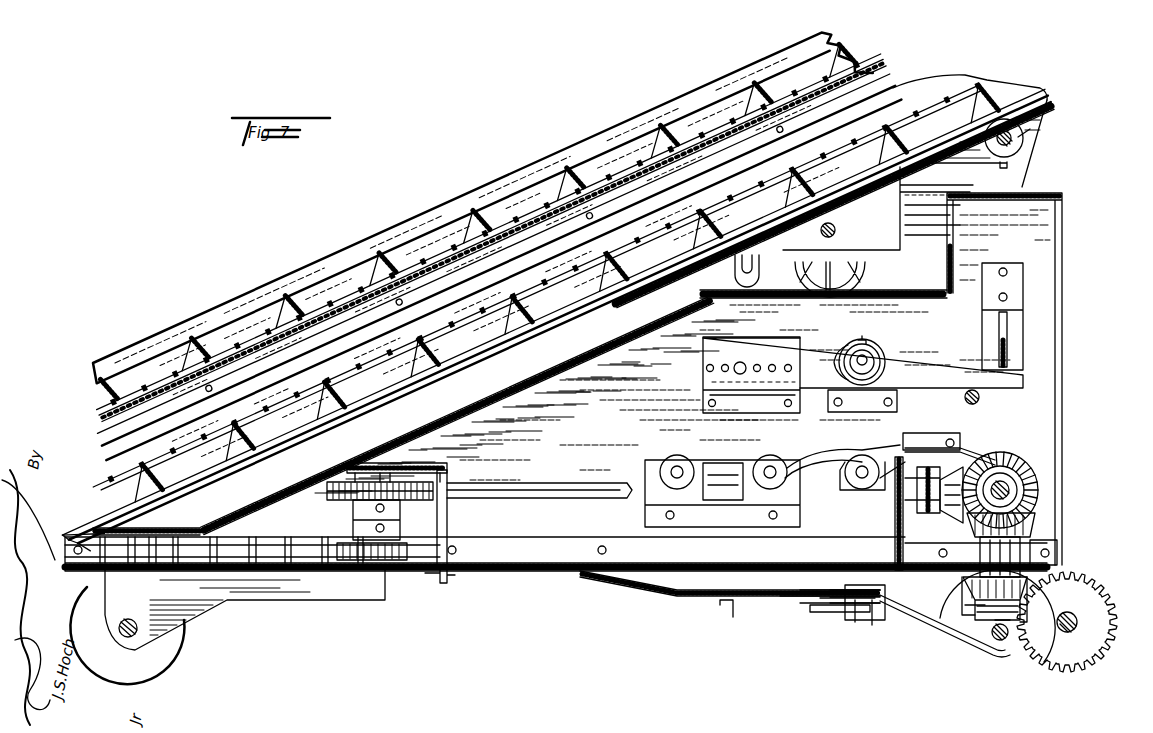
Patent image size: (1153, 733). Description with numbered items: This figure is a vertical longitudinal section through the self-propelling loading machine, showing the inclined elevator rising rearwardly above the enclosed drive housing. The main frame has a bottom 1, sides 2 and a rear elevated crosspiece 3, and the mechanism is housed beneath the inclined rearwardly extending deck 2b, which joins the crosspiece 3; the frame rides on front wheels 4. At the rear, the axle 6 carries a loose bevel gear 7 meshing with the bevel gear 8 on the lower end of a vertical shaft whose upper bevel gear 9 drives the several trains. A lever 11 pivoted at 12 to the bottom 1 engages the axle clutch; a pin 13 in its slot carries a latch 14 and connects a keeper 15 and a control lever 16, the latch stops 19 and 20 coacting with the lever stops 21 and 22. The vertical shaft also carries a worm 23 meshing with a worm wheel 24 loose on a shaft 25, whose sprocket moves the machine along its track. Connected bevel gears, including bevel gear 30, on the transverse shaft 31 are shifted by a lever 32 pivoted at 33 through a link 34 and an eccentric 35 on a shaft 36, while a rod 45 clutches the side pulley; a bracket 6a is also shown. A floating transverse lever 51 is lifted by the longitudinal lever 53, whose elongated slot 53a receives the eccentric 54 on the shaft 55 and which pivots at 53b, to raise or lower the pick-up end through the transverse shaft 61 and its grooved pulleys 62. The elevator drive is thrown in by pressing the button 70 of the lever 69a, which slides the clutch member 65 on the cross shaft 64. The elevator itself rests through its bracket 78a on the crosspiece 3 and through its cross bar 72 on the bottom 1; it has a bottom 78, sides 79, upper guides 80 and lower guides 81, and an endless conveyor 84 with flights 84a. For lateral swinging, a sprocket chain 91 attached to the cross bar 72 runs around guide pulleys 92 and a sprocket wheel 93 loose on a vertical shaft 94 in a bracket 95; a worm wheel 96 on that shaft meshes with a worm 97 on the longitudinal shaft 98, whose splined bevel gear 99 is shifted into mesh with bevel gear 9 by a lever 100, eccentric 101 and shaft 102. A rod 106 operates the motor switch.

The bottom 1 is at (410, 585).
The sides 2 is at (631, 391).
The inclined rearwardly extending deck 2b is at (539, 386).
The rear elevated crosspiece 3 is at (1050, 195).
The front wheels 4 is at (176, 660).
The rear axle 6 is at (980, 650).
The bearing bracket 6a is at (1059, 545).
The bevel gear 7 is at (1007, 688).
The bevel gear 8 is at (960, 602).
The bevel gear 9 is at (1037, 526).
The lever 11 is at (670, 595).
The pivot 12 is at (444, 584).
The pin 13 is at (850, 616).
The latch 14 is at (790, 612).
The keeper 15 is at (825, 614).
The lever 16 is at (786, 600).
The stop 19 is at (873, 628).
The stop 20 is at (790, 608).
The stop 21 is at (853, 625).
The stop 22 is at (720, 608).
The worm 23 is at (975, 625).
The worm wheel 24 is at (1100, 658).
The shaft 25 is at (1077, 622).
The bevel gear 30 is at (1040, 478).
The transverse shaft 31 is at (1030, 497).
The lever 32 is at (972, 450).
The pivot 33 is at (925, 444).
The link 34 is at (859, 413).
The eccentric 35 is at (772, 455).
The shaft 36 is at (762, 468).
The rod 45 is at (982, 399).
The transverse lever 51 is at (998, 364).
The longitudinal lever 53 is at (803, 344).
The elongated slot 53a is at (846, 344).
The pivot 53b is at (742, 366).
The eccentric 54 is at (872, 363).
The shaft 55 is at (864, 336).
The transverse shaft 61 is at (821, 232).
The grooved pulleys 62 is at (862, 268).
The transverse shaft 64 is at (992, 135).
The clutch member 65 is at (1020, 148).
The lever 69a is at (1018, 137).
The button 70 is at (735, 268).
The cross bar 72 is at (97, 515).
The bottom 78 is at (430, 336).
The bracket 78a is at (896, 226).
The sides 79 is at (440, 231).
The guides 80 is at (284, 283).
The guides 81 is at (378, 440).
The endless conveyor 84 is at (343, 270).
The flights or buckets 84a is at (604, 277).
The sprocket chain 91 is at (300, 540).
The guide pulleys 92 is at (152, 566).
The sprocket wheel 93 is at (425, 555).
The vertical shaft 94 is at (392, 482).
The bracket 95 is at (447, 490).
The worm wheel 96 is at (449, 500).
The worm 97 is at (440, 478).
The longitudinal shaft 98 is at (556, 498).
The bevel gear 99 is at (950, 523).
The lever 100 is at (899, 447).
The eccentric 101 is at (864, 460).
The shaft 102 is at (850, 478).
The rod 106 is at (677, 466).